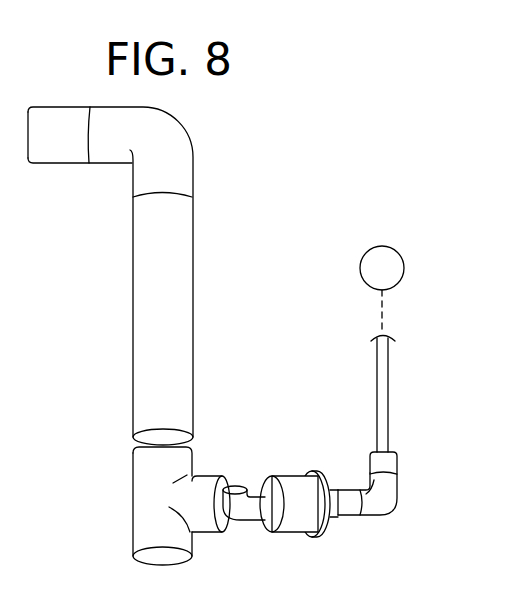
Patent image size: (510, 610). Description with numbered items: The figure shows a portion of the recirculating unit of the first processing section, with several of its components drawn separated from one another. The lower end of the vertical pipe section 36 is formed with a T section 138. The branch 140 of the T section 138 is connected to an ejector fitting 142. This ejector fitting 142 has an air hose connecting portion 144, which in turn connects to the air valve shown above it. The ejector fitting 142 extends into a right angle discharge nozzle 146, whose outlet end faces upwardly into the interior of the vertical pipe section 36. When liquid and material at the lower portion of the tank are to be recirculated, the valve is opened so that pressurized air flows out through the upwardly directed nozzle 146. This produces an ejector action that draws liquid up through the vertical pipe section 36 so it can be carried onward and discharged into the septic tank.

The discharge pipe / elbow conduit 36 is at (110, 310).
The T section 138 is at (143, 527).
The branch 140 is at (205, 522).
The right angle discharge nozzle 146 is at (242, 483).
The ejector fitting 142 is at (297, 477).
The air hose connecting portion 144 is at (380, 363).